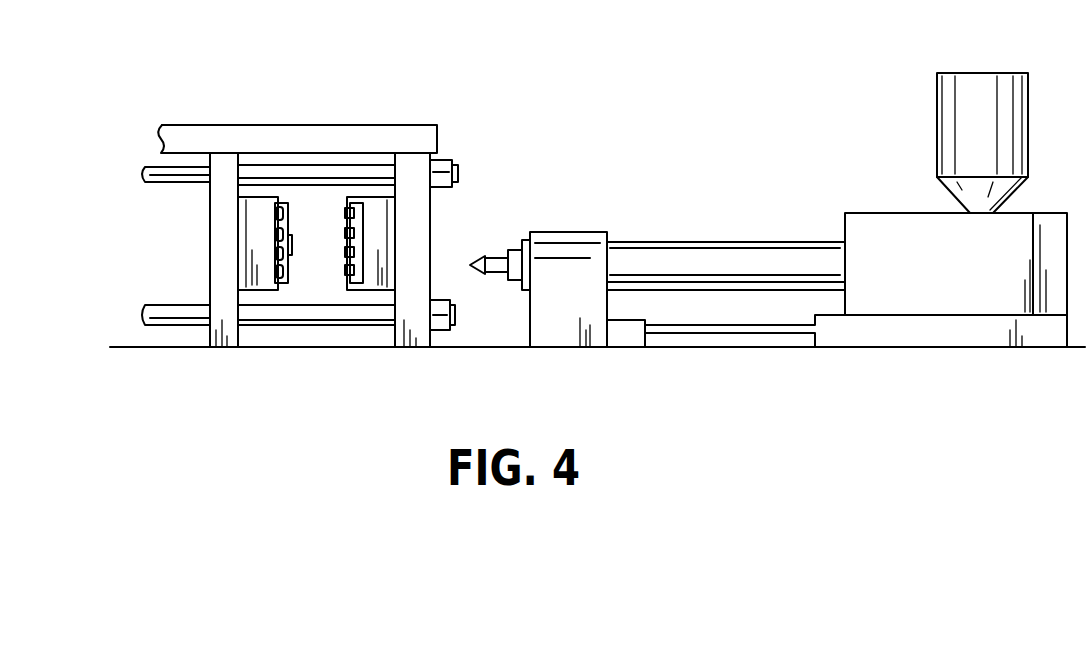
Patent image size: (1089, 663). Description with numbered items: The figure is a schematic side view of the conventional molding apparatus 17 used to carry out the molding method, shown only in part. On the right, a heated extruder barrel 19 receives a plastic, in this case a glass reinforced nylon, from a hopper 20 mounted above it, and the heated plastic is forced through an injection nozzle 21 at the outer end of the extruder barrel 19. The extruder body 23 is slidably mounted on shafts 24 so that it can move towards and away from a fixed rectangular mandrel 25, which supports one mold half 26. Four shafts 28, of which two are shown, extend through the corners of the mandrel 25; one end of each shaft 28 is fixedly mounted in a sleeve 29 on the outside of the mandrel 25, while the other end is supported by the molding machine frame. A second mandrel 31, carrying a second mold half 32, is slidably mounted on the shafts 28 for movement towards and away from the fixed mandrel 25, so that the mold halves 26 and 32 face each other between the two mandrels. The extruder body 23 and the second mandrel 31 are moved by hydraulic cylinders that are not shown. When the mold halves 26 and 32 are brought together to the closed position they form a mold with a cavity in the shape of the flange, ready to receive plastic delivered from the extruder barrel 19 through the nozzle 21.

The molding apparatus 17 is at (625, 148).
The heated extruder barrel 19 is at (710, 242).
The hopper 20 is at (967, 110).
The injection nozzle 21 is at (485, 258).
The extruder body 23 is at (953, 261).
The shafts 24 is at (740, 335).
The fixed rectangular mandrel 25 is at (402, 333).
The mold half 26 is at (385, 287).
The shafts 28 is at (360, 172).
The sleeve 29 is at (443, 158).
The second mandrel 31 is at (222, 168).
The second mold half 32 is at (263, 257).